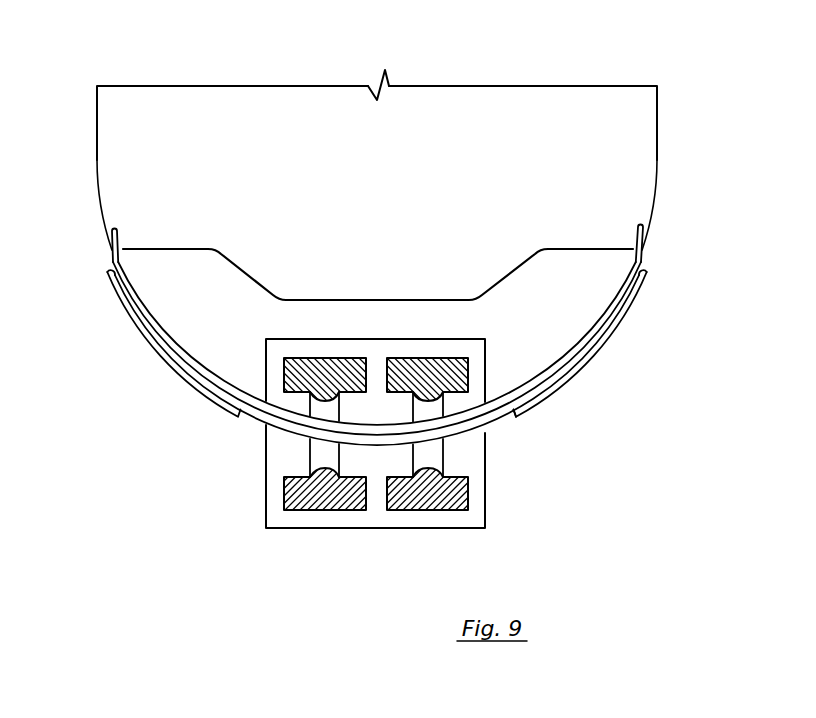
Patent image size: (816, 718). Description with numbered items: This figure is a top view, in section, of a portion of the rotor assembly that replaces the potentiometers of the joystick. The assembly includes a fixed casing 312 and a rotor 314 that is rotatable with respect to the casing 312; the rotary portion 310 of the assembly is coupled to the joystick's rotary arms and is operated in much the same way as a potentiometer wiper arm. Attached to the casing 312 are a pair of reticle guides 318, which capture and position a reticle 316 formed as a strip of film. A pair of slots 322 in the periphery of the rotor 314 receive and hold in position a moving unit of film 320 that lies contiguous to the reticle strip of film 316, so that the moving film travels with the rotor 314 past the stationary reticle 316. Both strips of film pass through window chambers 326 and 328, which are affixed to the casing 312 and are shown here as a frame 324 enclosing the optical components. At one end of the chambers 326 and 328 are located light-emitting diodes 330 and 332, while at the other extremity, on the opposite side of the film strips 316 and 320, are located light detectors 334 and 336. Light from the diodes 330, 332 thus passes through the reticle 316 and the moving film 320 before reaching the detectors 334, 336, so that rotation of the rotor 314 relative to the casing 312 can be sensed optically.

The rotary portion 310 is at (489, 74).
The fixed casing 312 is at (590, 288).
The rotor 314 is at (637, 121).
The reticle 316 is at (505, 419).
The reticle guides 318 is at (150, 338).
The moving unit of film 320 is at (501, 393).
The slots 322 is at (112, 242).
The mounting frame 324 is at (265, 498).
The window chamber 326 is at (320, 455).
The window chamber 328 is at (437, 458).
The light-emitting diode 330 is at (327, 512).
The light-emitting diode 332 is at (431, 507).
The light detector 334 is at (303, 360).
The light detector 336 is at (441, 360).